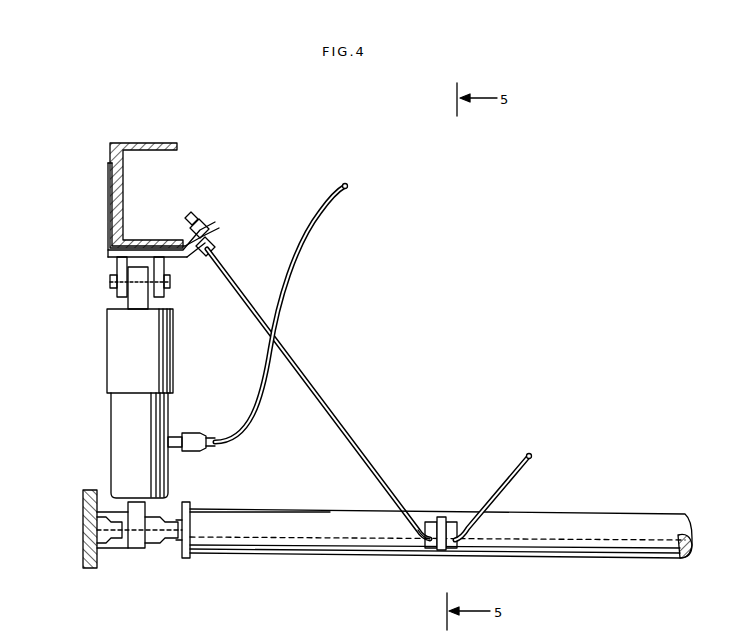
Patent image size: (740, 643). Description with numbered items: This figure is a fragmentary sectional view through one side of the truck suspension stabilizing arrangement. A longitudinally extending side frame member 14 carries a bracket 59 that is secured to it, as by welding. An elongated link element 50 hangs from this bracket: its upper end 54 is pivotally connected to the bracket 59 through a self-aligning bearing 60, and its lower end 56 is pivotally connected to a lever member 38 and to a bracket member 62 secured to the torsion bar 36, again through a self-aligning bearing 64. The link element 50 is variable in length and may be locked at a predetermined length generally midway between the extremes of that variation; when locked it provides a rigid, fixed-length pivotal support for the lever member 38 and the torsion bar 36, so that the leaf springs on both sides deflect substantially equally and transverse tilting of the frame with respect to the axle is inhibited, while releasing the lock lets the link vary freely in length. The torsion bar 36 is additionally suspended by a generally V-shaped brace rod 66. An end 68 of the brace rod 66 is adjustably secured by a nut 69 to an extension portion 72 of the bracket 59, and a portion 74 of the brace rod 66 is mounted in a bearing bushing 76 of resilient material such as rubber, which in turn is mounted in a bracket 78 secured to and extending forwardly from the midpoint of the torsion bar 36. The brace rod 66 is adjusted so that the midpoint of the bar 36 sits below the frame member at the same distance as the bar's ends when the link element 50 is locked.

The side frame member 14 is at (149, 142).
The torsion bar 36 is at (611, 526).
The lever member 38 is at (83, 527).
The link element 50 is at (103, 424).
The upper end of link element 54 is at (145, 304).
The lower end of link element 56 is at (150, 520).
The bracket 59 is at (108, 262).
The self-aligning bearing 60 is at (118, 283).
The bracket member 62 is at (192, 556).
The self-aligning bearing 64 is at (134, 548).
The brace rod 66 is at (329, 405).
The end of brace rod 68 is at (191, 215).
The nut 69 is at (207, 226).
The extension portion of bracket 72 is at (216, 238).
The portion of brace rod 74 is at (461, 546).
The bearing bushing 76 is at (425, 540).
The bracket 78 is at (440, 518).